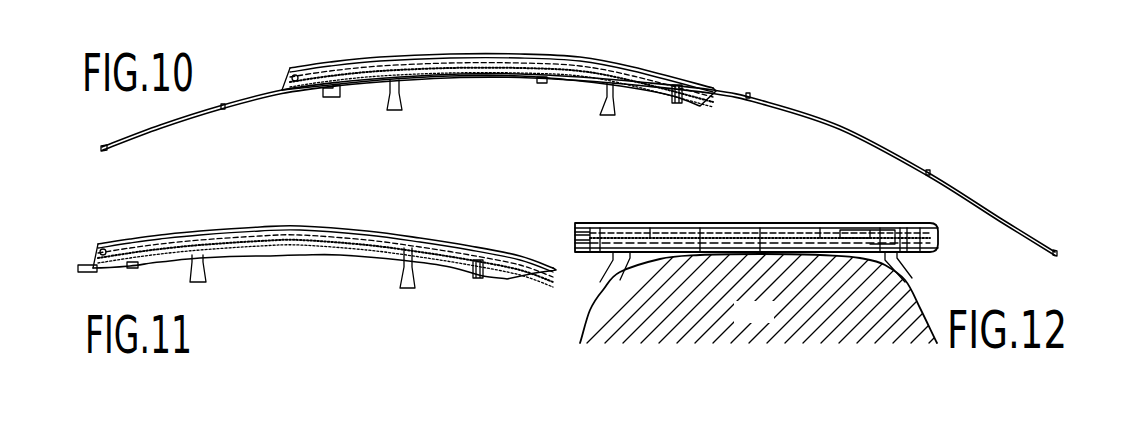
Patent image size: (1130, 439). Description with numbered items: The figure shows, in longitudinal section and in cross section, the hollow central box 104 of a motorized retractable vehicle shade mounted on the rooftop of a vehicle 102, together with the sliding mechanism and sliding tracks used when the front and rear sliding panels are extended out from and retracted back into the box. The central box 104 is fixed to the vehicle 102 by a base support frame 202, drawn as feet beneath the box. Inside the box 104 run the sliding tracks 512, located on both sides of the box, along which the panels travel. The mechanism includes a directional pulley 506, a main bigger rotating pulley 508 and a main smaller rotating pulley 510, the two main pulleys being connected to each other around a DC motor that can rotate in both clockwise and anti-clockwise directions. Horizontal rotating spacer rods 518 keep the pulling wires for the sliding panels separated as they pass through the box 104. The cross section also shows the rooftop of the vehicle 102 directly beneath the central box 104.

In FIG. 12, the vehicle 102 is at (801, 296).
In FIG. 10, the hollow central box 104 is at (455, 60).
In FIG. 11, the hollow central box 104 is at (290, 228).
In FIG. 12, the hollow central box 104 is at (667, 223).
In FIG. 10, the base support frame 202 is at (402, 88).
In FIG. 11, the base support frame 202 is at (277, 257).
In FIG. 12, the base support frame 202 is at (910, 257).
In FIG. 12, the directional pulley 506 is at (877, 223).
In FIG. 10, the main bigger rotating pulley 508 is at (640, 67).
In FIG. 11, the main bigger rotating pulley 508 is at (377, 232).
In FIG. 12, the main bigger rotating pulley 508 is at (723, 222).
In FIG. 10, the main smaller rotating pulley 510 is at (592, 80).
In FIG. 11, the main smaller rotating pulley 510 is at (435, 253).
In FIG. 12, the main smaller rotating pulley 510 is at (793, 212).
In FIG. 12, the sliding tracks 512 is at (573, 235).
In FIG. 10, the horizontal rotating spacer rods 518 is at (445, 67).
In FIG. 11, the horizontal rotating spacer rods 518 is at (197, 230).